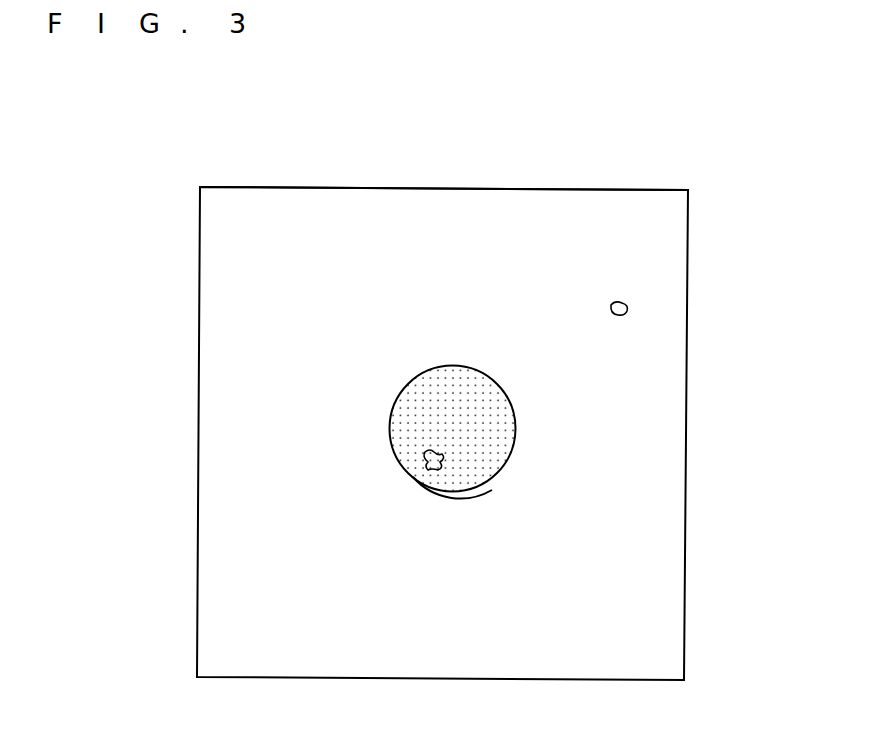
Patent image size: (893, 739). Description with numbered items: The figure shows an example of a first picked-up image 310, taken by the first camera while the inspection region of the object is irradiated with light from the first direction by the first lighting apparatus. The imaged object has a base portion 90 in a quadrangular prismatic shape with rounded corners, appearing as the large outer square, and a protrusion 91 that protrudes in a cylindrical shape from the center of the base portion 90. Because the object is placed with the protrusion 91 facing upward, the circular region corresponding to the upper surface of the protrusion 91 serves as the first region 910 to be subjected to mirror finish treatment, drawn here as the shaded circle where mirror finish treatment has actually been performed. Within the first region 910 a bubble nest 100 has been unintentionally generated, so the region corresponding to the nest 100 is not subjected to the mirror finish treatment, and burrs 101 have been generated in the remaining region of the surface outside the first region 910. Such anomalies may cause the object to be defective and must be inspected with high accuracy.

The first picked-up image 310 is at (590, 188).
The burrs 101 is at (602, 295).
The protrusion 91 is at (517, 392).
The base portion 90 is at (696, 408).
The bubble nest 100 is at (427, 455).
The first region 910 is at (490, 480).